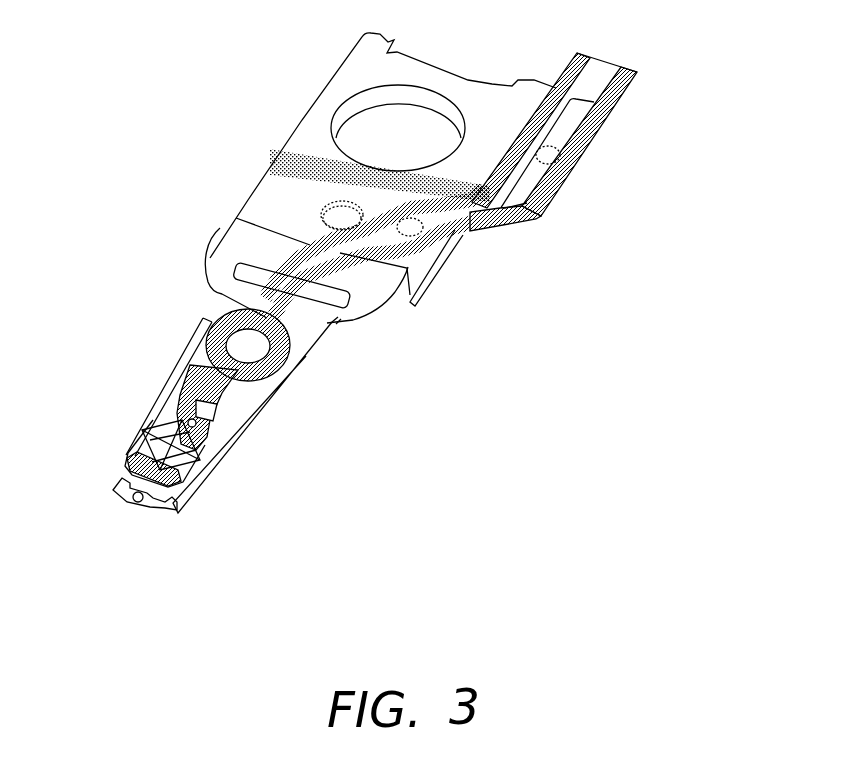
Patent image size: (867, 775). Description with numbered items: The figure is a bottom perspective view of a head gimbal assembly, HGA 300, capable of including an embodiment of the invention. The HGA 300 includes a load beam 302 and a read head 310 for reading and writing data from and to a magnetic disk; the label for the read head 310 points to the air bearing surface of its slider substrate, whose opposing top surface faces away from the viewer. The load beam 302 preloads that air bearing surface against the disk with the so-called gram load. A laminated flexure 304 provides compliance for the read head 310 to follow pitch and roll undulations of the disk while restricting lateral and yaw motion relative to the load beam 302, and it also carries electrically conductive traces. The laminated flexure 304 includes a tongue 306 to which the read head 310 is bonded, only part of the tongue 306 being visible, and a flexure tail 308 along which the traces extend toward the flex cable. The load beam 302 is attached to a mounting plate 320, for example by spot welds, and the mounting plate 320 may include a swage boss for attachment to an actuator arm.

The HGA 300 is at (682, 112).
The load beam 302 is at (257, 405).
The laminated flexure 304 is at (218, 330).
The tongue 306 is at (122, 480).
The flexure tail 308 is at (598, 74).
The read head 310 is at (163, 432).
The mounting plate 320 is at (362, 76).